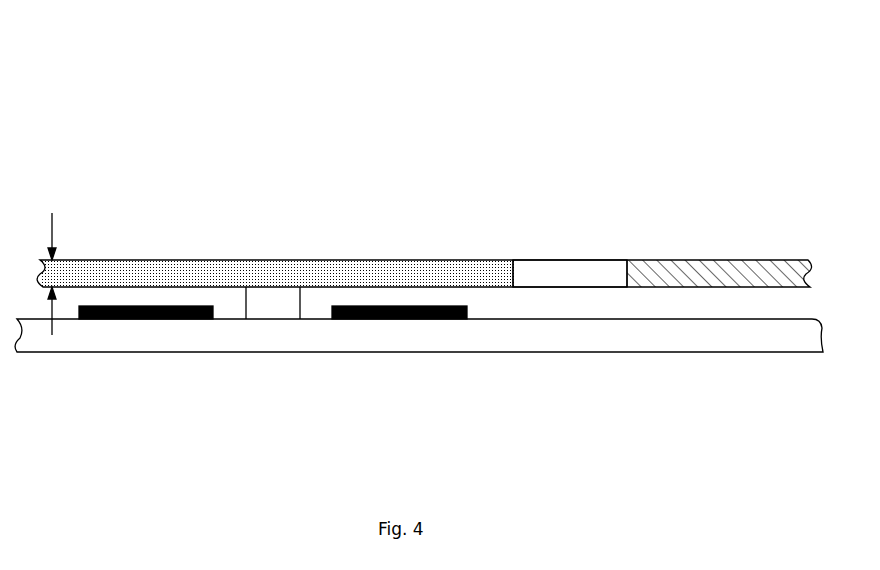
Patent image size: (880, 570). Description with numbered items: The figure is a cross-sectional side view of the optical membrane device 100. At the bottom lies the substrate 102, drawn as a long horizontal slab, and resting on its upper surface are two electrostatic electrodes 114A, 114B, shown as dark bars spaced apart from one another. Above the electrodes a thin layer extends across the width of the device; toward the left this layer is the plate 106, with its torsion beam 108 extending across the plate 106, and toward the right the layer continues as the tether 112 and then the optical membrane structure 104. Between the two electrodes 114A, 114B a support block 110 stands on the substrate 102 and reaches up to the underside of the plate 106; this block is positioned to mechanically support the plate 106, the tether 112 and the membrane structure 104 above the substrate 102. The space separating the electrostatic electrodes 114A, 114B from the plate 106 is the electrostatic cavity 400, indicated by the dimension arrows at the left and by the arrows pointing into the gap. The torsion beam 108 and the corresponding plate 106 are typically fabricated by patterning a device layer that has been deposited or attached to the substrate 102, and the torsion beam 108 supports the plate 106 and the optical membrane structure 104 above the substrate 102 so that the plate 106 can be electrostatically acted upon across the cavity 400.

The optical membrane device 100 is at (436, 80).
The substrate 102 is at (803, 342).
The optical membrane structure 104 is at (695, 261).
The plate 106 is at (128, 261).
The torsion beam 108 is at (277, 261).
The support block 110 is at (265, 308).
The tether 112 is at (549, 270).
The electrostatic electrode 114A is at (168, 319).
The electrostatic electrode 114B is at (387, 320).
The electrostatic cavity 400 is at (83, 261).